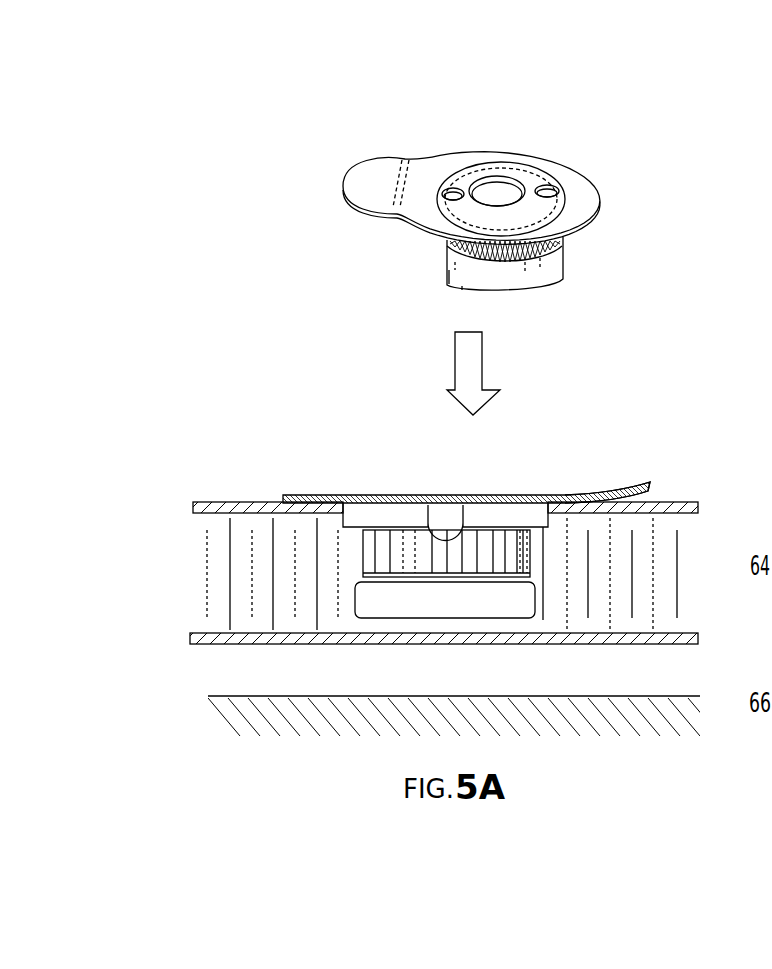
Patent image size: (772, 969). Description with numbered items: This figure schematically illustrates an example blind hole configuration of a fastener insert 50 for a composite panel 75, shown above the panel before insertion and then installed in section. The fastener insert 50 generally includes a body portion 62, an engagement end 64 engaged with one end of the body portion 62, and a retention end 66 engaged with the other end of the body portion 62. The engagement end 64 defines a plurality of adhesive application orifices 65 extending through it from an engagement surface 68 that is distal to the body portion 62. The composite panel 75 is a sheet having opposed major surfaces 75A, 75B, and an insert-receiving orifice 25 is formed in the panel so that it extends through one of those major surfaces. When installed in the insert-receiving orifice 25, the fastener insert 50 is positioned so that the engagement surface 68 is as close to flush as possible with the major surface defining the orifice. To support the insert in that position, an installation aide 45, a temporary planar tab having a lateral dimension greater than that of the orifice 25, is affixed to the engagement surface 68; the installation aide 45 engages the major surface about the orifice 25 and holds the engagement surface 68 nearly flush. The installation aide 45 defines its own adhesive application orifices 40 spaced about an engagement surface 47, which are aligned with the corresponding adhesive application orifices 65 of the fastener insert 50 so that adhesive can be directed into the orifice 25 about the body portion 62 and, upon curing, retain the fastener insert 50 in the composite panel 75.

The insert-receiving orifice 25 is at (352, 546).
The adhesive application orifices 40 is at (448, 186).
The installation aide 45 is at (454, 157).
The engagement surface 47 is at (643, 504).
The fastener insert 50 is at (456, 284).
The body portion 62 is at (531, 257).
The engagement end 64 is at (545, 527).
The adhesive application orifices 65 is at (546, 179).
The retention end 66 is at (473, 606).
The engagement surface 68 is at (369, 498).
The composite panel 75 is at (222, 612).
The major surface 75A is at (268, 648).
The major surface 75B is at (665, 500).